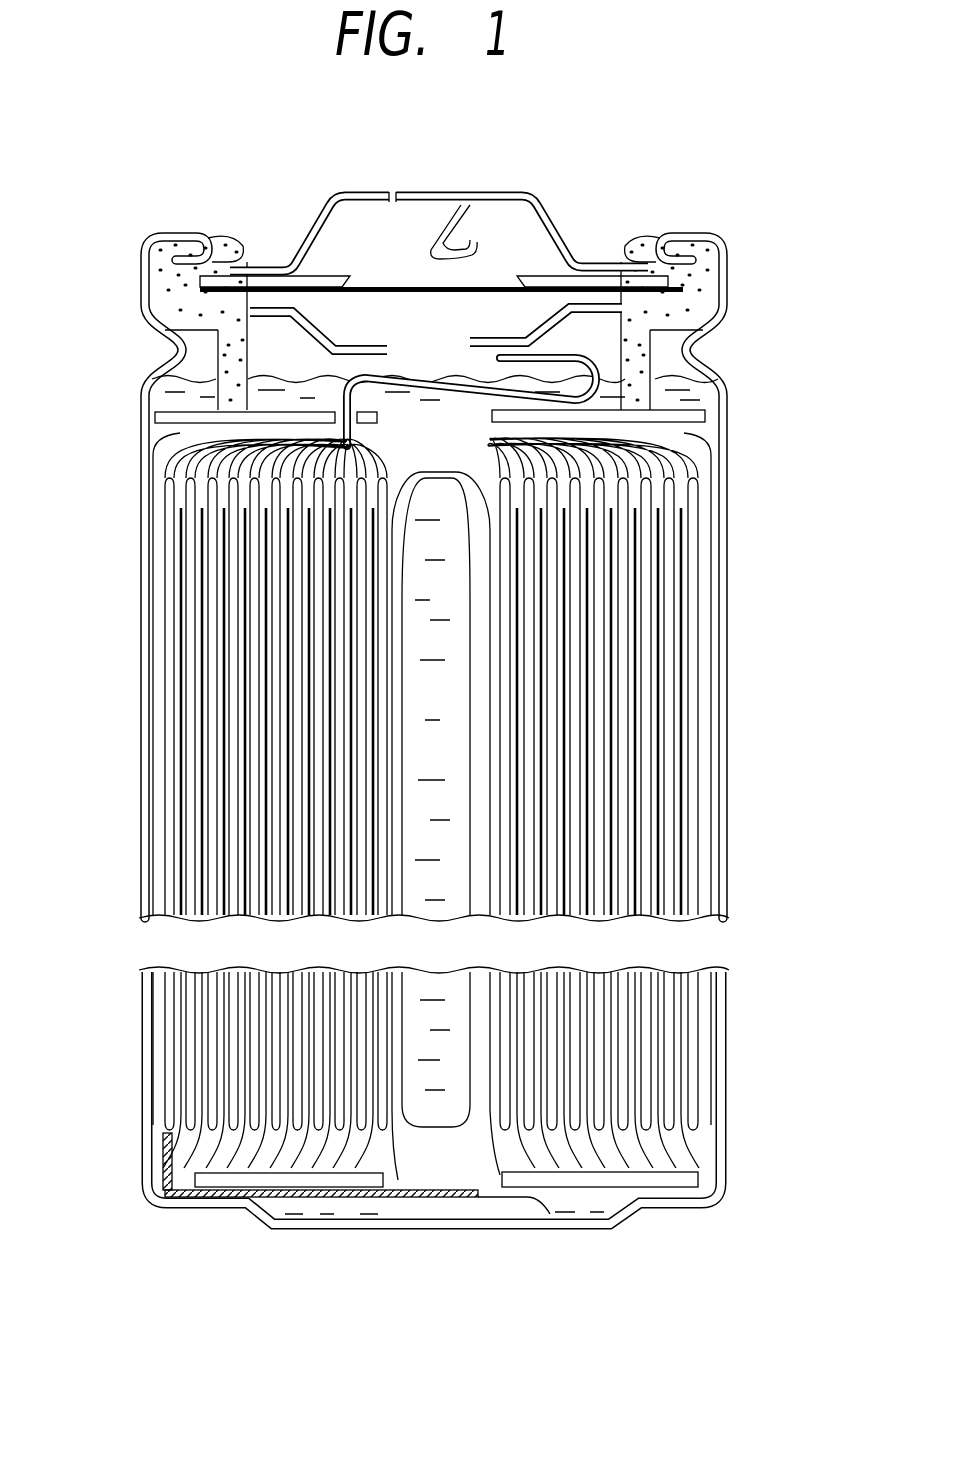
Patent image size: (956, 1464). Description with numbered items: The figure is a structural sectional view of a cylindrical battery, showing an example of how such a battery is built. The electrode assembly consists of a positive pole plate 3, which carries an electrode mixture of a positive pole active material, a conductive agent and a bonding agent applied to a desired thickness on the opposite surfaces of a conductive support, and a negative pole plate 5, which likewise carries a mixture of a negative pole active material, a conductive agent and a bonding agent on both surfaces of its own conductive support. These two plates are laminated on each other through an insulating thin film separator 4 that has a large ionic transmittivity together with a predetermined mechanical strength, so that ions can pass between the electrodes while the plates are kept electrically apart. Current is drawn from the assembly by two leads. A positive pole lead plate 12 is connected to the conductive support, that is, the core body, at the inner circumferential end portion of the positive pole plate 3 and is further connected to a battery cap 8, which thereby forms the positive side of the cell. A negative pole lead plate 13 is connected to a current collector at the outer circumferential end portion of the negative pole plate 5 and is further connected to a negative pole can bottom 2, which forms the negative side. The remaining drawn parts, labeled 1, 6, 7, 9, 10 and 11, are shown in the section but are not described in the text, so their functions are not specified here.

The battery case 1 is at (700, 346).
The negative pole can bottom 2 is at (665, 1203).
The positive pole plate 3 is at (638, 510).
The separator 4 is at (183, 467).
The negative pole plate 5 is at (180, 562).
The electrolyte 6 is at (680, 382).
The sealing plate 7 is at (412, 285).
The battery cap 8 is at (533, 197).
The safety vent valve 9 is at (490, 287).
The current collecting lead 10 is at (488, 337).
The terminal bracket 11 is at (333, 277).
The positive pole lead plate 12 is at (632, 316).
The negative pole lead plate 13 is at (440, 1197).